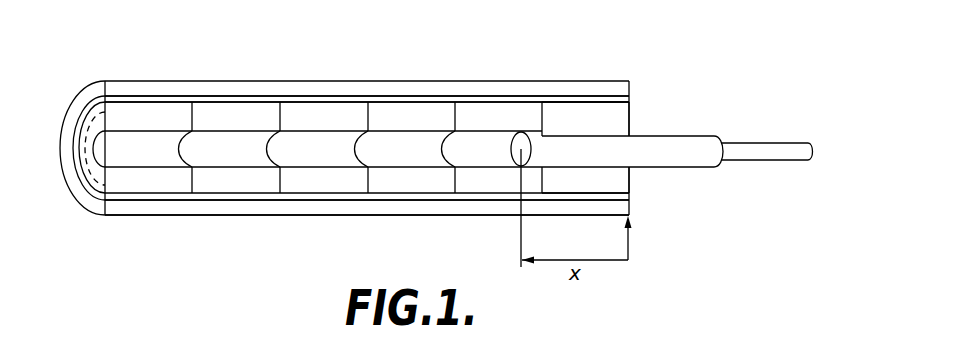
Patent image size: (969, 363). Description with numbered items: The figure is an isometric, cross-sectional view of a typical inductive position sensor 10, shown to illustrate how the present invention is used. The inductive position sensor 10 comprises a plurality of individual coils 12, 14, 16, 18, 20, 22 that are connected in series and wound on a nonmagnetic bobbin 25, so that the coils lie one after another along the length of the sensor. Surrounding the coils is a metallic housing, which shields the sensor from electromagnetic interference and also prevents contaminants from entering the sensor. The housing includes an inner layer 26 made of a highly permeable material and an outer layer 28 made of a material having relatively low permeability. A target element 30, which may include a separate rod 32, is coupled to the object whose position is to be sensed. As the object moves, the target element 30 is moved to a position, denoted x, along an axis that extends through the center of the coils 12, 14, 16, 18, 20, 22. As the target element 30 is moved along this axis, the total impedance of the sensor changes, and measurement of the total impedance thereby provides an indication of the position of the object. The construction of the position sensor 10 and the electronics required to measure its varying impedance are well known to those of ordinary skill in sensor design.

The inductive position sensor 10 is at (664, 50).
The coil 12 is at (150, 118).
The coil 14 is at (238, 118).
The coil 16 is at (327, 120).
The coil 18 is at (414, 120).
The coil 20 is at (502, 122).
The coil 22 is at (588, 122).
The nonmagnetic bobbin 25 is at (148, 194).
The inner layer 26 is at (97, 199).
The outer layer 28 is at (372, 92).
The target element 30 is at (700, 140).
The rod 32 is at (763, 152).